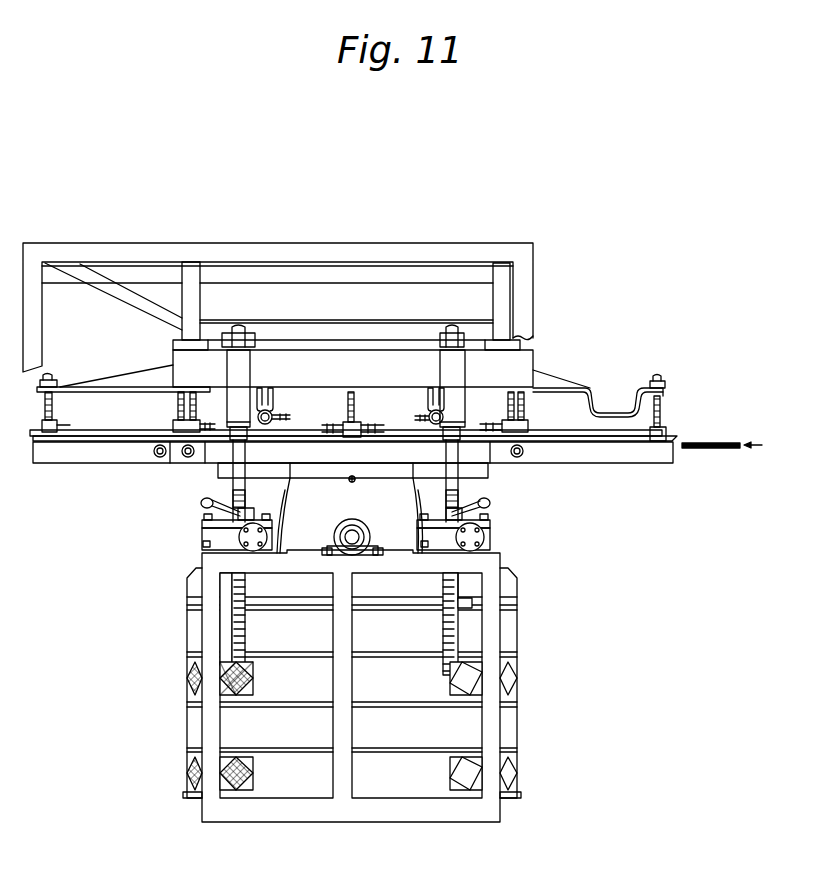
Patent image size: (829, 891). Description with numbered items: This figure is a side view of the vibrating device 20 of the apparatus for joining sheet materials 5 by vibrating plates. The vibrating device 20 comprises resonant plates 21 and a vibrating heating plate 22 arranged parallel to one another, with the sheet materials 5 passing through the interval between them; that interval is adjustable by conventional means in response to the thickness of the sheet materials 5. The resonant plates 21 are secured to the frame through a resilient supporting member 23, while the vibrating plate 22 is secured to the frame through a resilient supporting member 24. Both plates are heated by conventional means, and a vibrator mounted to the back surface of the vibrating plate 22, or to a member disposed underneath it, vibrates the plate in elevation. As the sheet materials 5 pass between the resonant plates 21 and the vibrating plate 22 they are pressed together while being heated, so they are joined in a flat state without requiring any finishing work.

The vibrating device 20 is at (550, 322).
The resonant plates 21 is at (668, 438).
The vibrating heating plate 22 is at (662, 458).
The resilient supporting member 23 is at (662, 403).
The resilient supporting member 24 is at (190, 676).
The sheet materials 5 is at (715, 450).